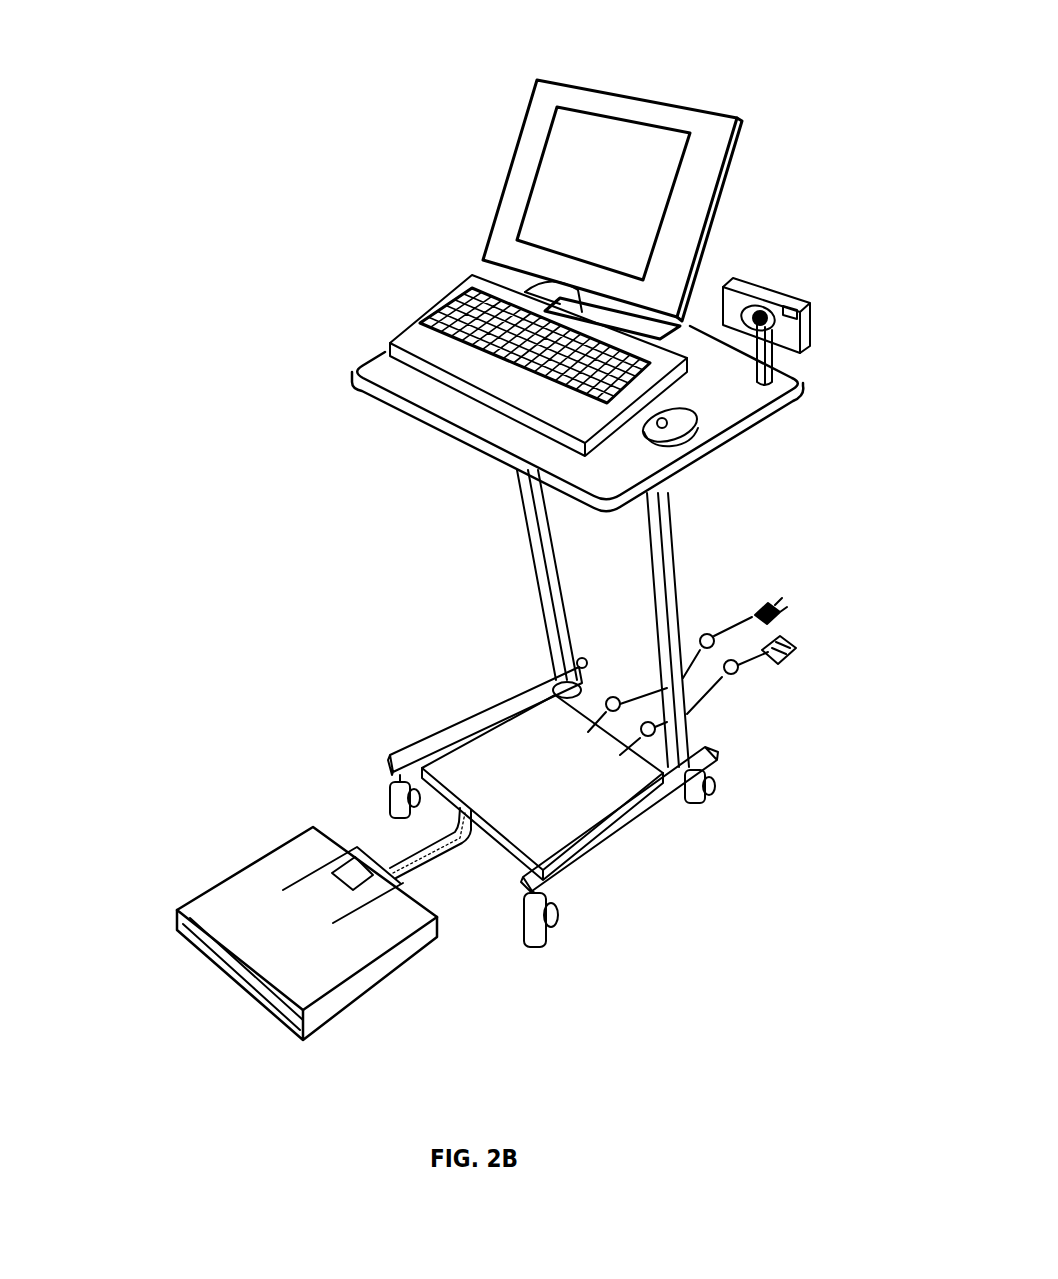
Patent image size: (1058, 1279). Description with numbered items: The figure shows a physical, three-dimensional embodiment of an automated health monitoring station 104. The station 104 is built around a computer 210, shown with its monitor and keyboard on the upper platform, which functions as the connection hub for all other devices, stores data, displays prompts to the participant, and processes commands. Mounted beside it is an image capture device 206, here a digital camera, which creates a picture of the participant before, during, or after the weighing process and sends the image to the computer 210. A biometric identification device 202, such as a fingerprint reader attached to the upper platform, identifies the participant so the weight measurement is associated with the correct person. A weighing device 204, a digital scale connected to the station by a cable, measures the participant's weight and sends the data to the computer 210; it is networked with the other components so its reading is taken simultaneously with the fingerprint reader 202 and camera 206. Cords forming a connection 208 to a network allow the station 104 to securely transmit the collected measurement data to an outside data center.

The automated health monitoring station 104 is at (173, 80).
The computer 210 is at (437, 287).
The image capture device 206 is at (815, 317).
The biometric identification device 202 is at (700, 430).
The network connection 208 is at (800, 647).
The weighing device 204 is at (260, 842).